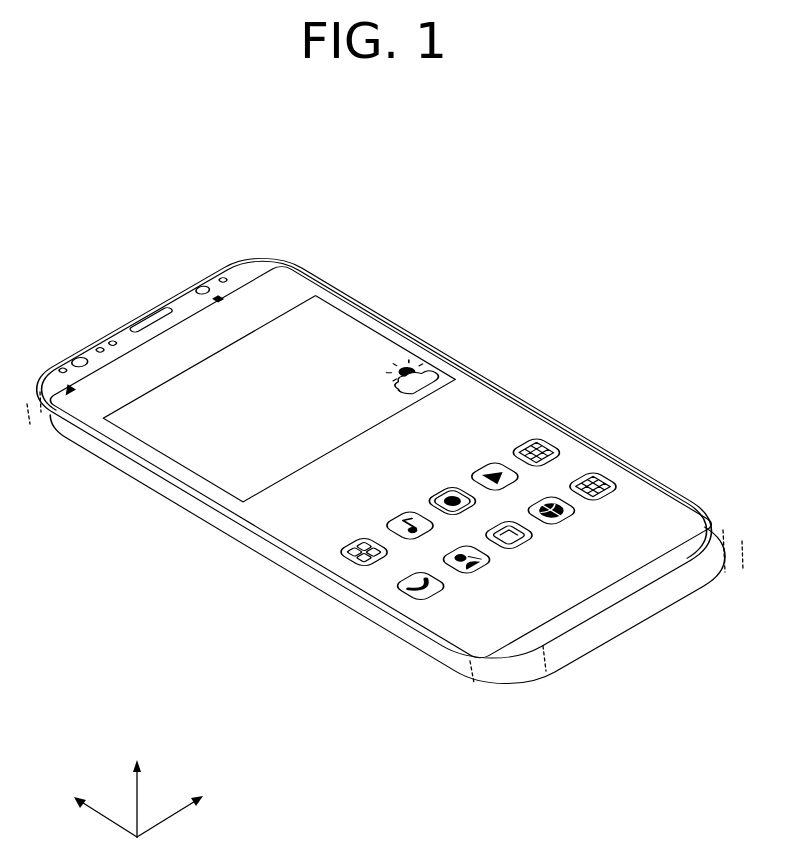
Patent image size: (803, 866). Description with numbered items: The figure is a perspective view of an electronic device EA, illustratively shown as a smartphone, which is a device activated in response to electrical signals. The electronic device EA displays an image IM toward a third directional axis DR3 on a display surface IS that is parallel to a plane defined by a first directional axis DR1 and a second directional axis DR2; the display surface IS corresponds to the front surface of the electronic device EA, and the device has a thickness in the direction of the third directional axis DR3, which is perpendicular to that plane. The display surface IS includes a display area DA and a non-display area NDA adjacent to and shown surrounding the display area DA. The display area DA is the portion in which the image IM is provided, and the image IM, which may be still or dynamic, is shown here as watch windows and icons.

The electronic device EA is at (384, 473).
The display surface IS is at (377, 460).
The non-display area NDA is at (440, 357).
The display area DA is at (365, 427).
The image IM is at (376, 333).
The first directional axis DR1 is at (182, 804).
The second directional axis DR2 is at (91, 804).
The third directional axis DR3 is at (139, 786).